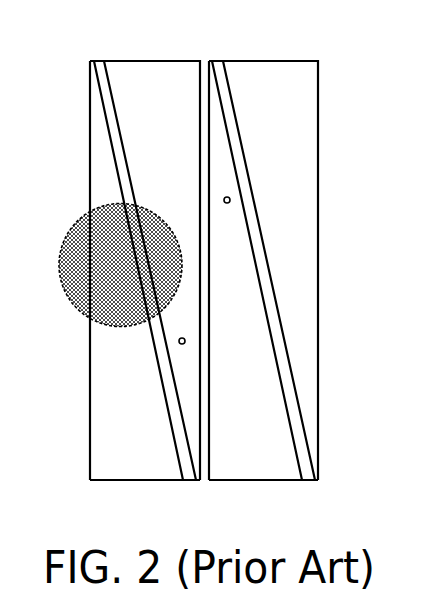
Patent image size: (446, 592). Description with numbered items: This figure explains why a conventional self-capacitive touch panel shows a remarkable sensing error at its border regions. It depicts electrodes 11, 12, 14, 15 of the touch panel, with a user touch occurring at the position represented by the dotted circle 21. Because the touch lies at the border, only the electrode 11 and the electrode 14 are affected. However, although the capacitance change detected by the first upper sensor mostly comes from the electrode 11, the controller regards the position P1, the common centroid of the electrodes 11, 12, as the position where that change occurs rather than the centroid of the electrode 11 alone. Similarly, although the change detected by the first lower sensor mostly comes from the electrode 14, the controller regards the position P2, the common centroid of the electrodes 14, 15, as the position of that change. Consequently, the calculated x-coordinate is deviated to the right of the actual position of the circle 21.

The electrode 11 is at (127, 68).
The electrode 12 is at (291, 79).
The electrode 14 is at (117, 472).
The electrode 15 is at (278, 472).
The dotted circle 21 is at (77, 280).
The common centroid position of electrodes 11 and 12 P1 is at (230, 200).
The common centroid position of electrodes 14 and 15 P2 is at (179, 341).